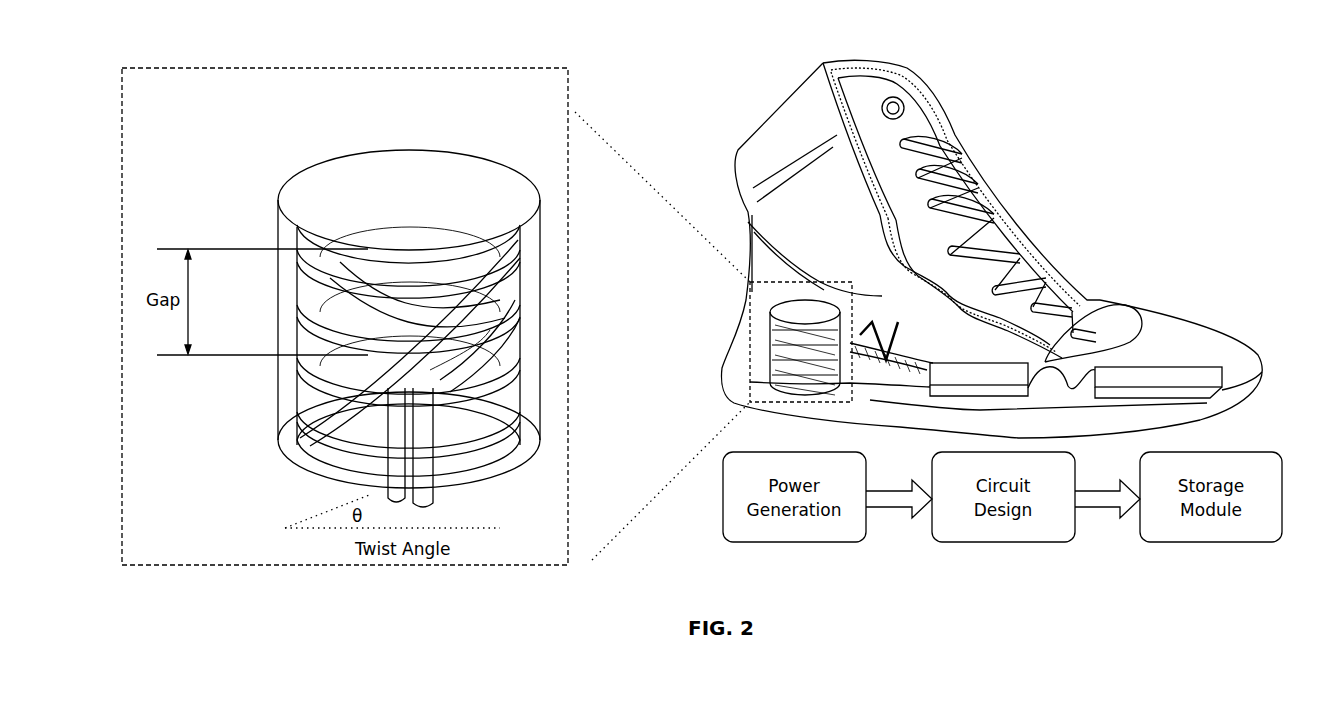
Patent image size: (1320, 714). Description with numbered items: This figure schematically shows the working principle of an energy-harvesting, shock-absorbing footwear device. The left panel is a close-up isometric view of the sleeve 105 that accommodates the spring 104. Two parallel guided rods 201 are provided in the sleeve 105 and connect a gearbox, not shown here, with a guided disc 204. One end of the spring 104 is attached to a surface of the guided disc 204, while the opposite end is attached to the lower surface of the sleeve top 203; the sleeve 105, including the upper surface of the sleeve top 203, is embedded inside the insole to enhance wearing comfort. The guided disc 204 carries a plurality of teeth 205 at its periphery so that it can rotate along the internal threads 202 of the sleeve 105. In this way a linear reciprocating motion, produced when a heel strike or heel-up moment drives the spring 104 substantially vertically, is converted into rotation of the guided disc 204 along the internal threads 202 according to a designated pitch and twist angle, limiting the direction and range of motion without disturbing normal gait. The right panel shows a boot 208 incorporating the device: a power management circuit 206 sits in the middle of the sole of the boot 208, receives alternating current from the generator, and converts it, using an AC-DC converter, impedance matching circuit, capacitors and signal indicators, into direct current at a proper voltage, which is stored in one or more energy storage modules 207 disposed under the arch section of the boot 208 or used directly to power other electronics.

The spring 104 is at (377, 292).
The sleeve 105 is at (543, 307).
The guided rods 201 is at (410, 458).
The internal threads 202 is at (300, 388).
The sleeve top 203 is at (402, 190).
The guided disc 204 is at (488, 362).
The teeth 205 is at (468, 395).
The power management circuit 206 is at (1000, 360).
The energy storage module 207 is at (1188, 364).
The boot 208 is at (1228, 150).